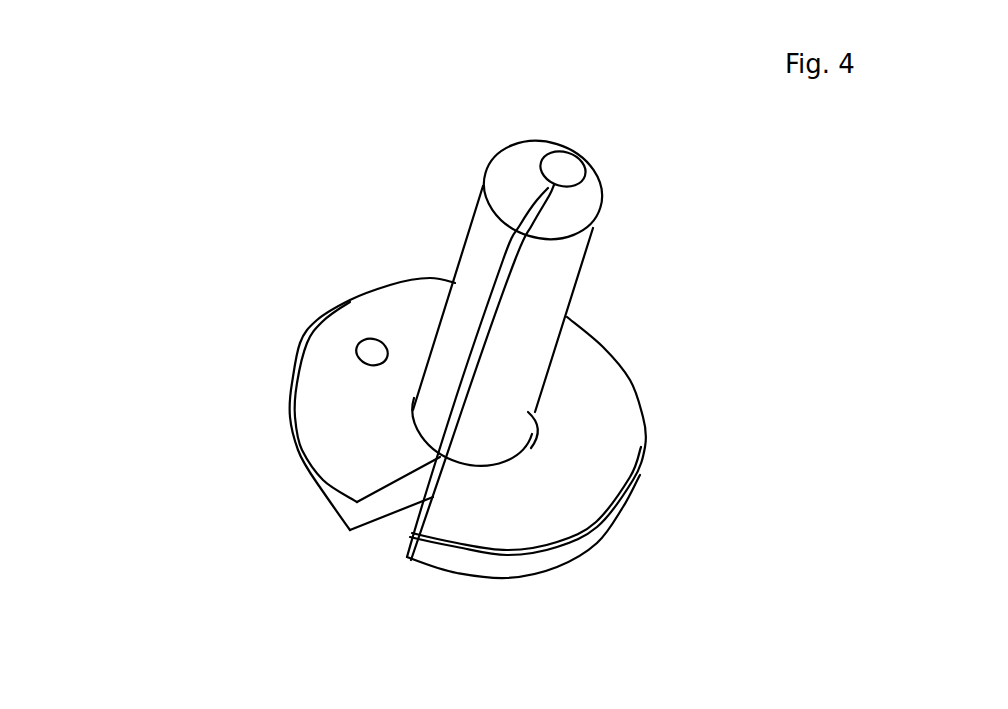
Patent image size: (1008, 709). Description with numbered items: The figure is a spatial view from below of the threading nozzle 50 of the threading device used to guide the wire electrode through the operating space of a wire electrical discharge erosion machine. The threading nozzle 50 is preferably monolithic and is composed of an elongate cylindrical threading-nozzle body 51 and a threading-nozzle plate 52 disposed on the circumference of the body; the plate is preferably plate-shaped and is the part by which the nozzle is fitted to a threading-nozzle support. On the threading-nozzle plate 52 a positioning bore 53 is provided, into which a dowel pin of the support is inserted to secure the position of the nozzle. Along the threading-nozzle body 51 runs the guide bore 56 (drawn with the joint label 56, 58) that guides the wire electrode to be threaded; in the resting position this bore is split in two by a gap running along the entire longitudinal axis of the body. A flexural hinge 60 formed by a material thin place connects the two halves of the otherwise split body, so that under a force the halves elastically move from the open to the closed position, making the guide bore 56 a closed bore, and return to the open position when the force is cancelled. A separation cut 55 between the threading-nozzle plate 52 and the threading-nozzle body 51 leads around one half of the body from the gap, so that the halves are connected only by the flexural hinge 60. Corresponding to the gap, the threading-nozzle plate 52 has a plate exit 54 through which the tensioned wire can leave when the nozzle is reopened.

The threading nozzle 50 is at (206, 451).
The threading-nozzle body 51 is at (475, 252).
The threading-nozzle plate 52 is at (332, 392).
The positioning bore 53 is at (357, 350).
The plate exit 54 is at (395, 518).
The separation cut 55 is at (538, 430).
The guide bore 56 is at (630, 370).
The slot wall 58 is at (545, 192).
The flexural hinge 60 is at (583, 153).